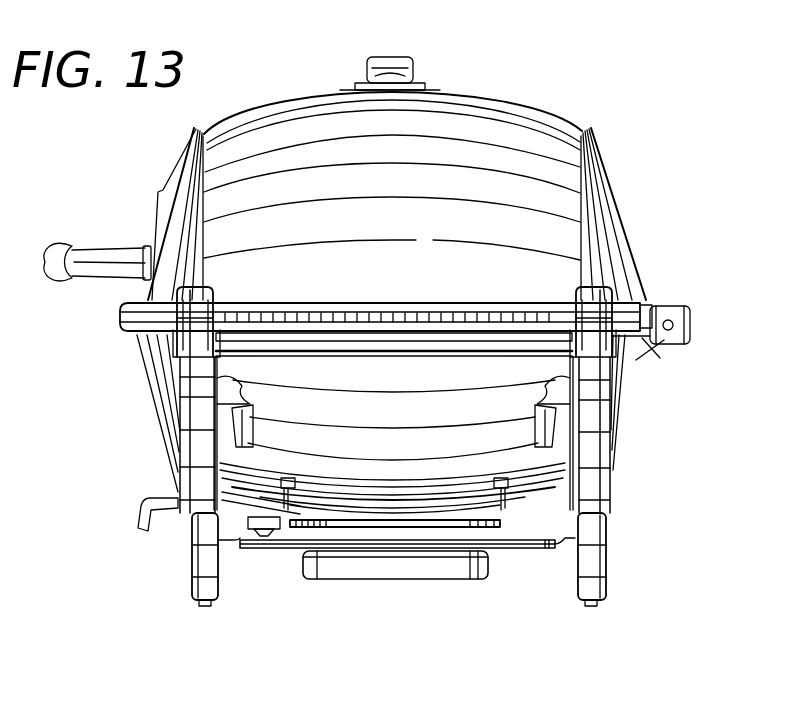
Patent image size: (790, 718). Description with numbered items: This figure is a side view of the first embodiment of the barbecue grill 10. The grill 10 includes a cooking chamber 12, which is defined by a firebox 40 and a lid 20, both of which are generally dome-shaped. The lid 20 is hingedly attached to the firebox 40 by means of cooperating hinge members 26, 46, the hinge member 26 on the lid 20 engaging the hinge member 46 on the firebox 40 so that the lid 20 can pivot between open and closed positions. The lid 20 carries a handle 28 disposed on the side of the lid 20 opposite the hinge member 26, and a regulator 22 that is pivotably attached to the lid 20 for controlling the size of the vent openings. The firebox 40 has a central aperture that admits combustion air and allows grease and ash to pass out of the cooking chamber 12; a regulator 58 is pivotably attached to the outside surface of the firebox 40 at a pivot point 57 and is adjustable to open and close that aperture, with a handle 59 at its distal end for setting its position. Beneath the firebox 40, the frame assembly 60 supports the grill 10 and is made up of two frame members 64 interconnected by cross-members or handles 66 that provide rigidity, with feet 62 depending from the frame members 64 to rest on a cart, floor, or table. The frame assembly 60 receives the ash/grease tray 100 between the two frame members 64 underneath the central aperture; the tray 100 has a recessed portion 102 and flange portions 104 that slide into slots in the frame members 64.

The barbecue grill 10 is at (632, 124).
The cooking chamber 12 is at (706, 318).
The lid 20 is at (660, 212).
The regulator 22 is at (400, 65).
The hinge member 26 is at (660, 304).
The handle 28 is at (62, 244).
The firebox 40 is at (640, 446).
The hinge member 46 is at (656, 352).
The pivot point 57 is at (270, 540).
The regulator 58 is at (310, 527).
The handle 59 is at (148, 500).
The frame assembly 60 is at (632, 546).
The feet 62 is at (190, 598).
The frame members 64 is at (192, 420).
The cross-member 66 is at (430, 304).
The ash/grease tray 100 is at (492, 592).
The recessed portion 102 is at (418, 560).
The flange portions 104 is at (548, 544).